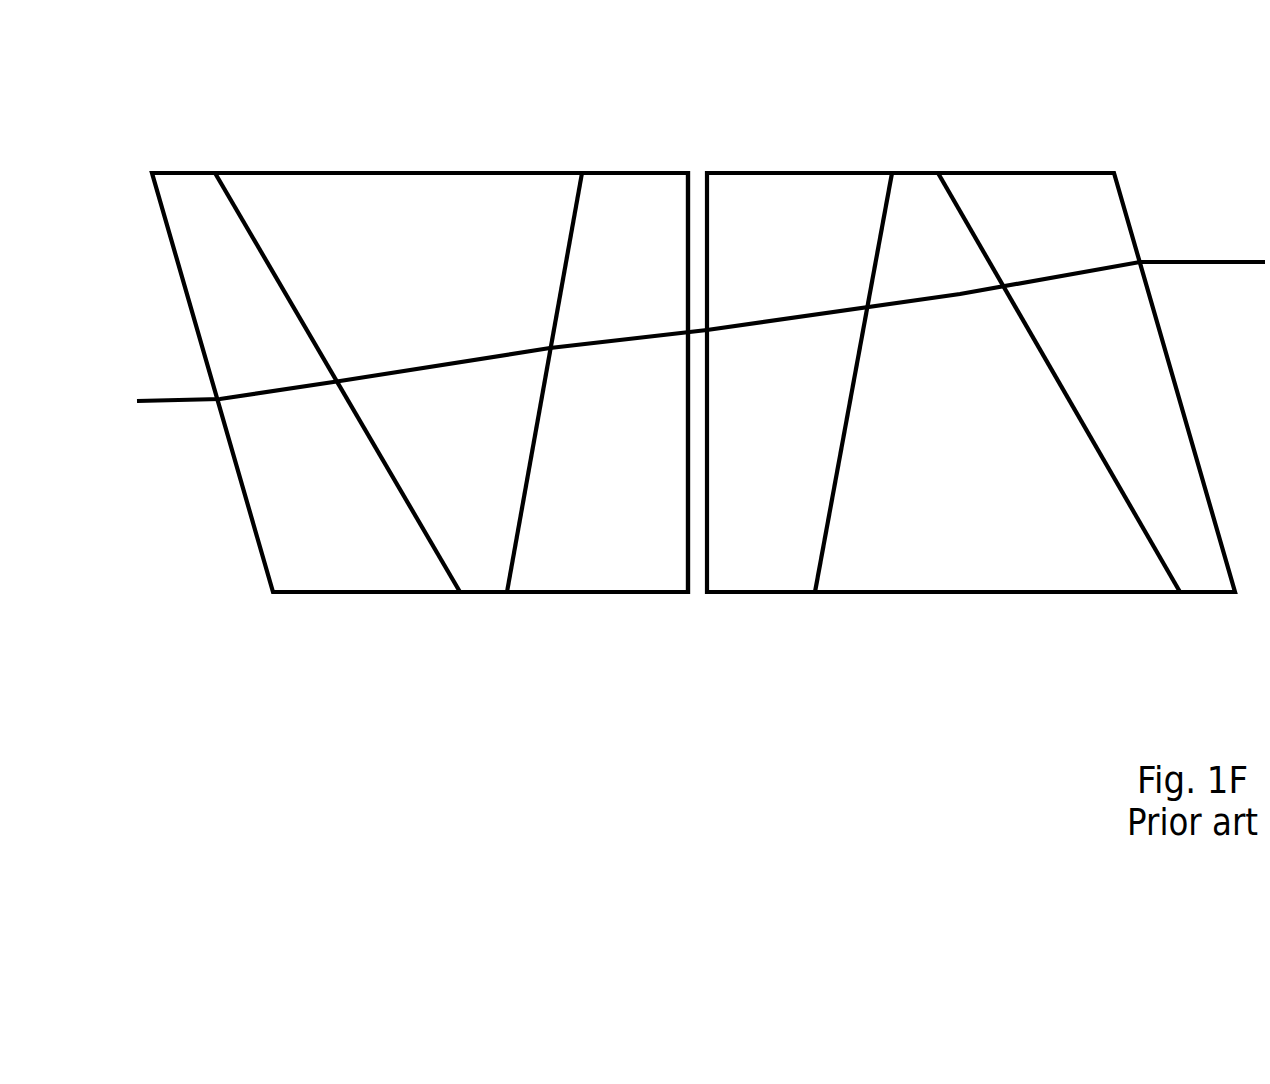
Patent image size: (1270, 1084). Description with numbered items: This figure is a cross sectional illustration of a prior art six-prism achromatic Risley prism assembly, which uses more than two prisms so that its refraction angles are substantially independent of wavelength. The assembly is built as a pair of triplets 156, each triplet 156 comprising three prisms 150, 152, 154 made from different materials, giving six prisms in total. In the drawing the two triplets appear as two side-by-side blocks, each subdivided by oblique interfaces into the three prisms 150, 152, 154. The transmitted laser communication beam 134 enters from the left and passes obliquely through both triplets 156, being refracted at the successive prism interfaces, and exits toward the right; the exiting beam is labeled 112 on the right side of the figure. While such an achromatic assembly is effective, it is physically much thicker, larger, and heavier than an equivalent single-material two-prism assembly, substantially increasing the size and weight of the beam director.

The interface line 112 is at (1172, 261).
The transmitted laser communication beam 134 is at (153, 403).
The prism 150 is at (262, 316).
The prism 152 is at (432, 264).
The prism 154 is at (645, 286).
The triplet of prisms 156 is at (690, 137).